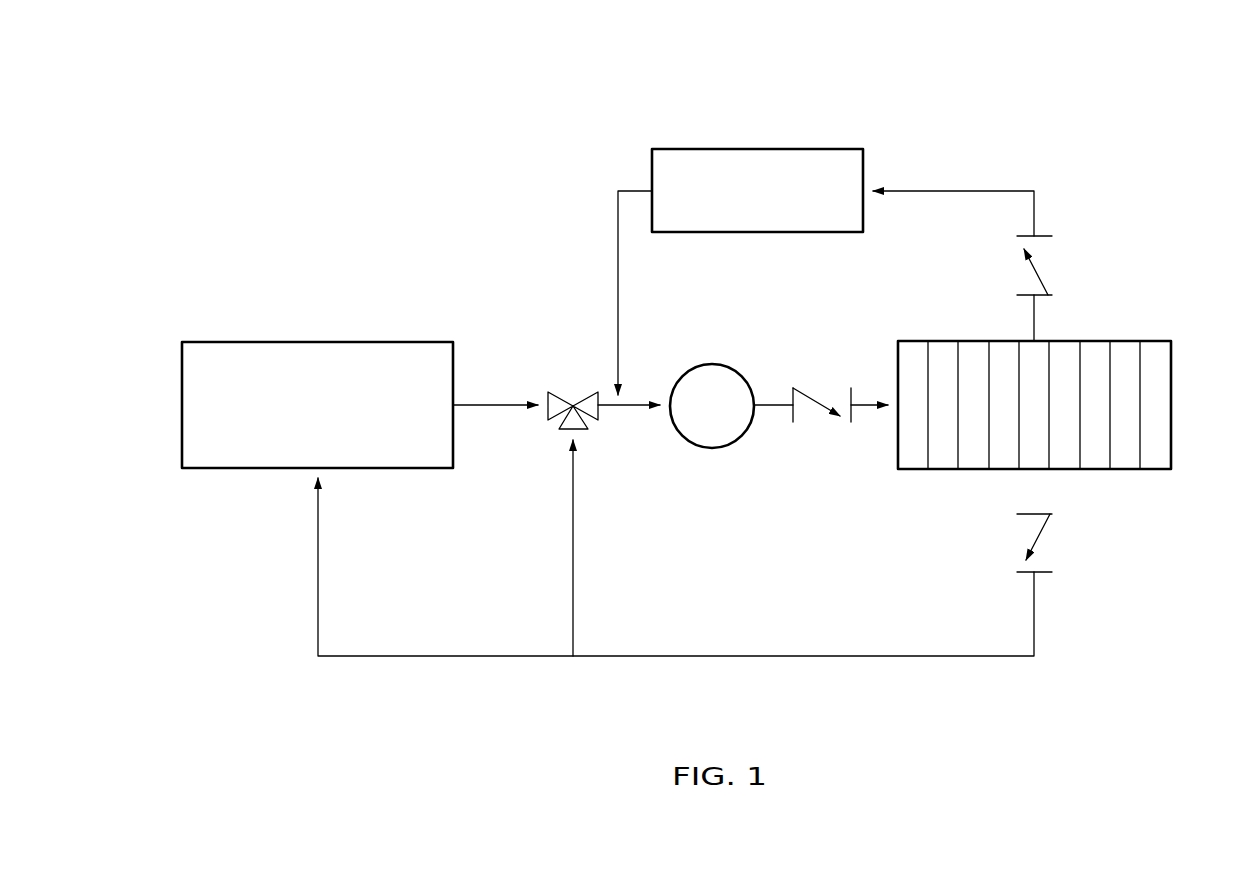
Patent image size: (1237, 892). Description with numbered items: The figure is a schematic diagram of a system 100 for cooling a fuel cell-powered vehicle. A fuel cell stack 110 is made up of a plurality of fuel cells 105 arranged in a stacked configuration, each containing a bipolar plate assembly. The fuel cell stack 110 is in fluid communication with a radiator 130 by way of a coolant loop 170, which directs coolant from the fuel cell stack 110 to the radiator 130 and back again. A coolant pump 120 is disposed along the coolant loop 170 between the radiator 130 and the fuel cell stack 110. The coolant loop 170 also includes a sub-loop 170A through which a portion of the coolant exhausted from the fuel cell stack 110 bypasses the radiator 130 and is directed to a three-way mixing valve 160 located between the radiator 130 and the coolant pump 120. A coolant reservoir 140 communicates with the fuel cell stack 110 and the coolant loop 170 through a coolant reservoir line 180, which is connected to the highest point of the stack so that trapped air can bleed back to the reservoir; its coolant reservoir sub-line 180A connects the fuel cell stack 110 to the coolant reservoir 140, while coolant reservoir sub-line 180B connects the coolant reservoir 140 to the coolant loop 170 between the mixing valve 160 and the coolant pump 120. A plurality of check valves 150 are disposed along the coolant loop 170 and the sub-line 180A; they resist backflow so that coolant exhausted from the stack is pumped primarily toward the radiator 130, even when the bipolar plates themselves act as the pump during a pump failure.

The system 100 is at (470, 141).
The fuel cell 105 is at (1140, 388).
The fuel cell stack 110 is at (1062, 378).
The coolant pump 120 is at (734, 419).
The radiator 130 is at (338, 419).
The coolant reservoir 140 is at (779, 204).
The check valve 150 is at (823, 408).
The three-way mixing valve 160 is at (565, 399).
The coolant loop 170 is at (318, 593).
The sub-loop 170A is at (573, 593).
The coolant reservoir line 180 is at (793, 238).
The coolant reservoir sub-line 180A is at (1013, 191).
The coolant reservoir sub-line 180B is at (618, 252).